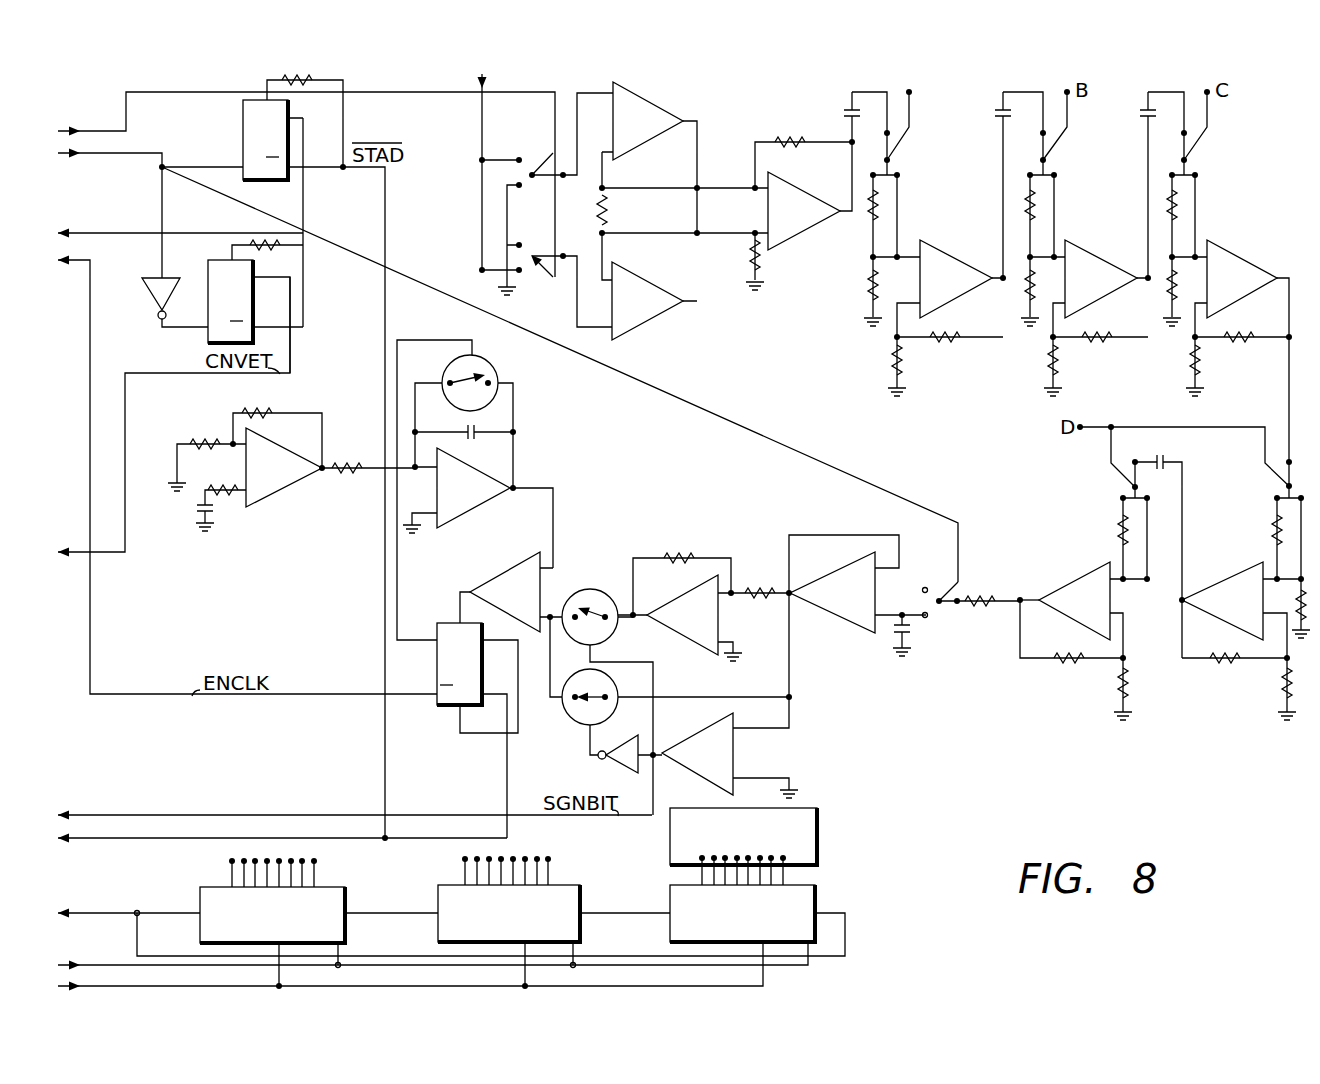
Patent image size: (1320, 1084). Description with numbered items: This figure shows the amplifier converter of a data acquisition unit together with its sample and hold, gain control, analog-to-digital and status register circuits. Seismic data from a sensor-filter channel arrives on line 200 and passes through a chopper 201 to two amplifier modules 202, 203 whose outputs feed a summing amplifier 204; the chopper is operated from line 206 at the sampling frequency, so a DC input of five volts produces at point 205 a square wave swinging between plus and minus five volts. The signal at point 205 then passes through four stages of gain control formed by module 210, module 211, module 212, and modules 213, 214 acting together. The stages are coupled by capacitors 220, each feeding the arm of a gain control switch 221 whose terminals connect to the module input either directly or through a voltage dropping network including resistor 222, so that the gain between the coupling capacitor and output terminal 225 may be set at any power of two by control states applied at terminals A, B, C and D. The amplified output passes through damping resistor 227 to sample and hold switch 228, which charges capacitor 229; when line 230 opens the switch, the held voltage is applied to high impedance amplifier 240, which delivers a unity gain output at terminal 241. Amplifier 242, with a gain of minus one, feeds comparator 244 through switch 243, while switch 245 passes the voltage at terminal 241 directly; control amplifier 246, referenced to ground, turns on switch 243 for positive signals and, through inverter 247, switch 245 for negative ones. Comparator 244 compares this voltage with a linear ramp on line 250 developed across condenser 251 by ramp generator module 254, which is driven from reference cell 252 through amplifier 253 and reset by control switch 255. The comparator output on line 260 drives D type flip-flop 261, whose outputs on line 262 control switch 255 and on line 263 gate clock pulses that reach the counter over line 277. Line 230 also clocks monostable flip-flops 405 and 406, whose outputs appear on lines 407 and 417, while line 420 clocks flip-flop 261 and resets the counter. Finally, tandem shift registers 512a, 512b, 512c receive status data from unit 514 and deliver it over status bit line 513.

The line 200 is at (484, 82).
The chopper 201 is at (532, 154).
The amplifier module 202 is at (650, 100).
The amplifier module 203 is at (626, 268).
The summing amplifier 204 is at (794, 186).
The point 205 is at (850, 158).
The line 206 is at (416, 82).
The module 210 is at (938, 254).
The module 211 is at (1083, 254).
The module 212 is at (1223, 254).
The module 213 is at (1228, 582).
The module 214 is at (1081, 582).
The capacitor 220 is at (852, 112).
The gain control switch 221 is at (902, 143).
The resistor 222 is at (870, 210).
The output terminal 225 is at (1033, 585).
The damping resistor 227 is at (983, 607).
The sample and hold switch 228 is at (941, 612).
The capacitor 229 is at (905, 636).
The sample and hold control line 230 is at (140, 154).
The amplifier 240 is at (829, 574).
The terminal 241 is at (791, 605).
The unity gain amplifier 242 is at (672, 596).
The switch 243 is at (569, 586).
The analog comparator 244 is at (504, 571).
The switch 245 is at (562, 711).
The amplifier 246 is at (698, 732).
The inverter 247 is at (640, 772).
The input line 250 is at (553, 502).
The condenser 251 is at (476, 428).
The DC reference voltage cell 252 is at (210, 510).
The amplifier 253 is at (279, 489).
The ramp generator module 254 is at (460, 462).
The control switch 255 is at (480, 361).
The line 260 is at (454, 600).
The D type flip-flop 261 is at (437, 660).
The line 262 is at (403, 330).
The line 263 is at (300, 696).
The line 277 is at (506, 776).
The D flip-flop 405 is at (242, 140).
The flip-flop 406 is at (210, 350).
The line 407 is at (308, 194).
The line 417 is at (290, 356).
The line 420 is at (390, 194).
The shift register 512a is at (342, 898).
The shift register 512b is at (580, 898).
The shift register 512c is at (816, 898).
The status bit line 513 is at (86, 913).
The unit 514 is at (816, 835).